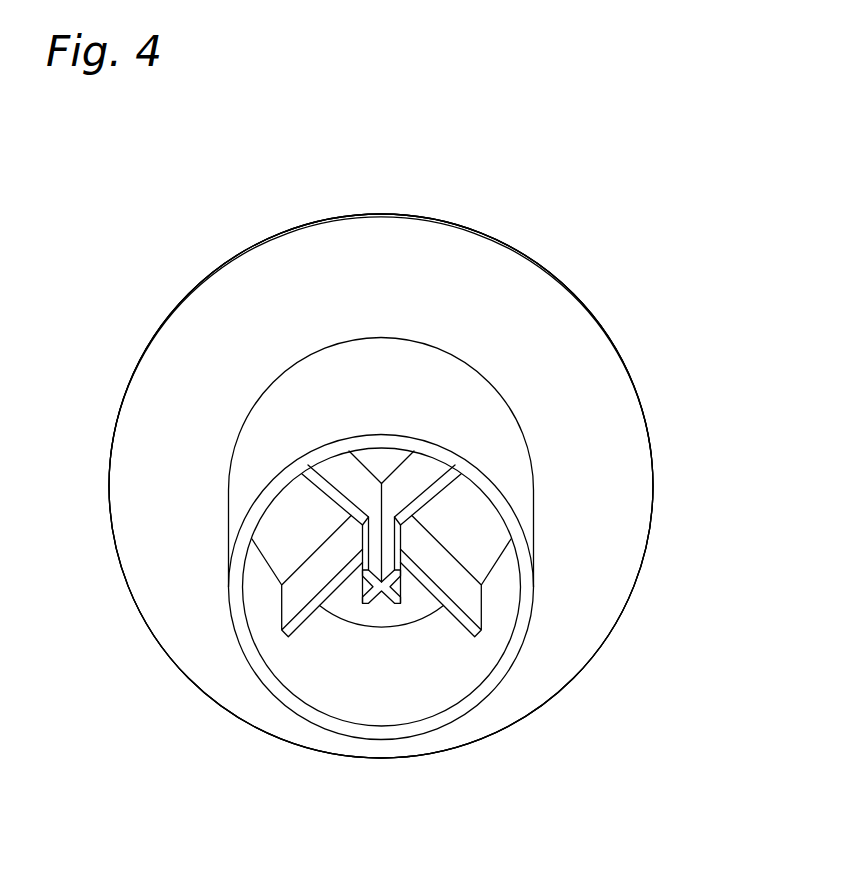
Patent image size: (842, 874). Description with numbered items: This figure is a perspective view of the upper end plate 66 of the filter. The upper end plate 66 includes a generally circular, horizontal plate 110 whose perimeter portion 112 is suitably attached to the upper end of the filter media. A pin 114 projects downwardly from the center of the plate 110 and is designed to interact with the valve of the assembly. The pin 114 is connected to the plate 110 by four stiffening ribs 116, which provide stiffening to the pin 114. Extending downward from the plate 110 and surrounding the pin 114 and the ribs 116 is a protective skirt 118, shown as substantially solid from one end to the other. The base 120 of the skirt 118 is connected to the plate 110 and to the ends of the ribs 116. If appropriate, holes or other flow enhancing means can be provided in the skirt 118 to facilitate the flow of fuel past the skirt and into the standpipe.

The upper end plate 66 is at (590, 218).
The plate 110 is at (417, 486).
The perimeter portion 112 is at (628, 487).
The protective skirt 118 is at (293, 428).
The base 120 is at (420, 372).
The pin 114 is at (440, 605).
The stiffening ribs 116 is at (461, 632).